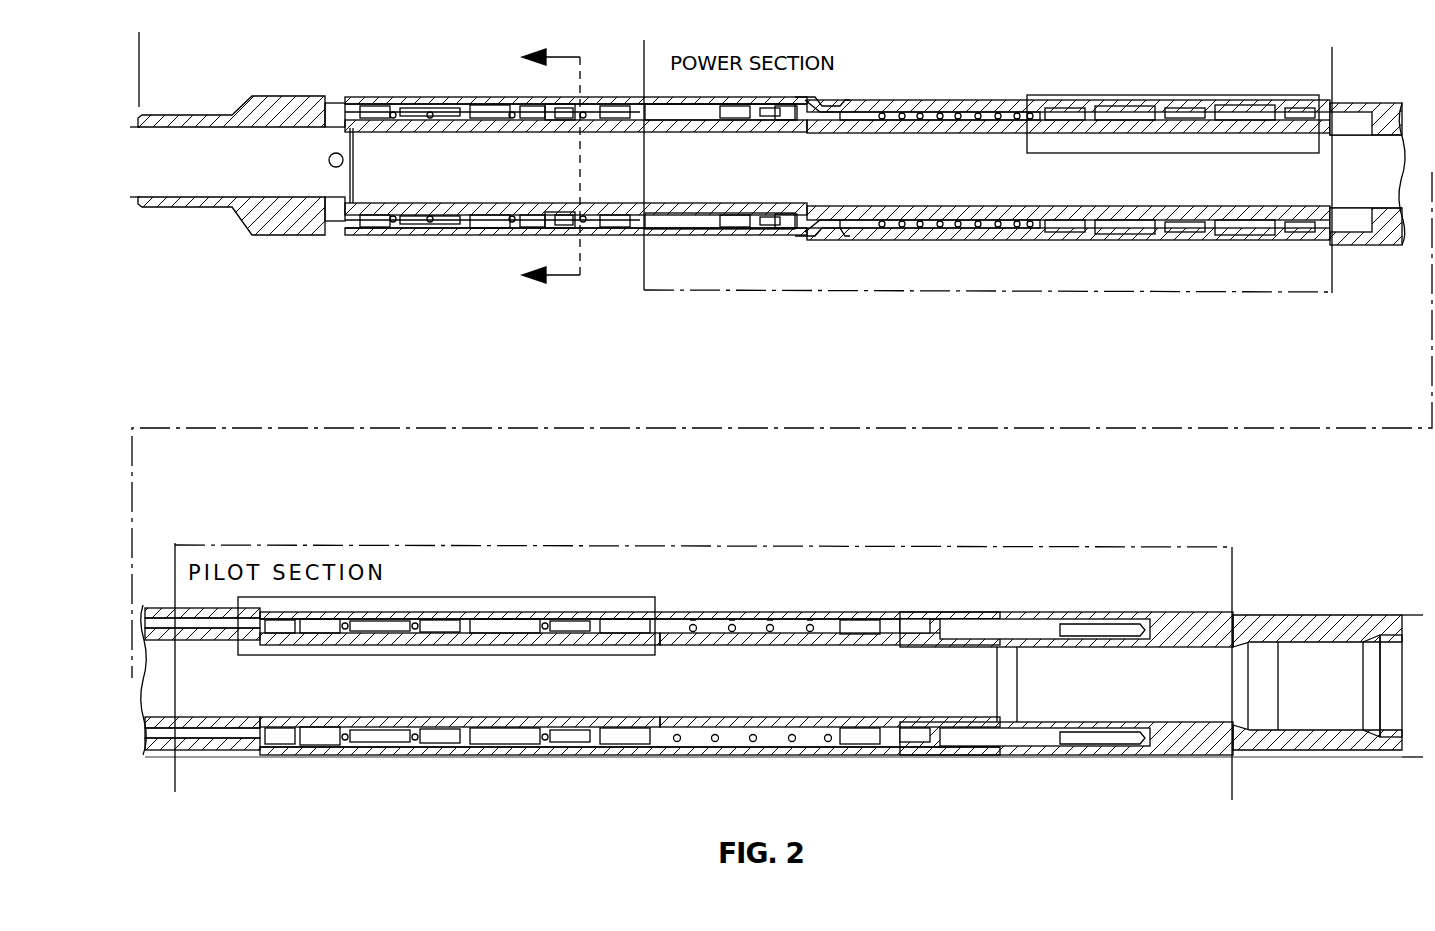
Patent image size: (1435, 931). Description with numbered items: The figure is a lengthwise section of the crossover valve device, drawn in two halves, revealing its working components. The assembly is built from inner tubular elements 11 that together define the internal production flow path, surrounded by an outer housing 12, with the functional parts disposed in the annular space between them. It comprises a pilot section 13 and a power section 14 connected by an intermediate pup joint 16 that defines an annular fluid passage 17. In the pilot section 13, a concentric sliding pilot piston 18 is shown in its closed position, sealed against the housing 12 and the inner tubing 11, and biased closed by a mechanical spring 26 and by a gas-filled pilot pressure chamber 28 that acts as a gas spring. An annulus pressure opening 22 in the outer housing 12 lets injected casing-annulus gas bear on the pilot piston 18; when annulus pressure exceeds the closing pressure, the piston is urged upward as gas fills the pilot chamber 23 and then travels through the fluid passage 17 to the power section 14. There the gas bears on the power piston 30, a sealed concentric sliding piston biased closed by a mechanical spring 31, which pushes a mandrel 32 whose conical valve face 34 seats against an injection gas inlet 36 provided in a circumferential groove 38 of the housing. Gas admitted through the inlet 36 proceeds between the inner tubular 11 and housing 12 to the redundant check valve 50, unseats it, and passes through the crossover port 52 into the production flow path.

The inner tubular elements 11 is at (975, 135).
The outer housing 12 is at (808, 612).
The pilot section 13 is at (712, 610).
The power section 14 is at (915, 92).
The intermediate pup joint 16 is at (1362, 102).
The annular fluid passage 17 is at (1402, 112).
The pilot piston 18 is at (495, 615).
The annulus pressure opening 22 is at (278, 610).
The pilot chamber 23 is at (305, 610).
The mechanical spring 26 is at (715, 750).
The pilot pressure chamber 28 is at (980, 625).
The power piston 30 is at (1205, 108).
The mechanical spring 31 is at (958, 112).
The mandrel 32 is at (905, 130).
The valve face 34 is at (795, 130).
The injection gas inlet 36 is at (810, 103).
The circumferential groove 38 is at (838, 103).
The redundant check valve 50 is at (553, 95).
The crossover port 52 is at (333, 103).